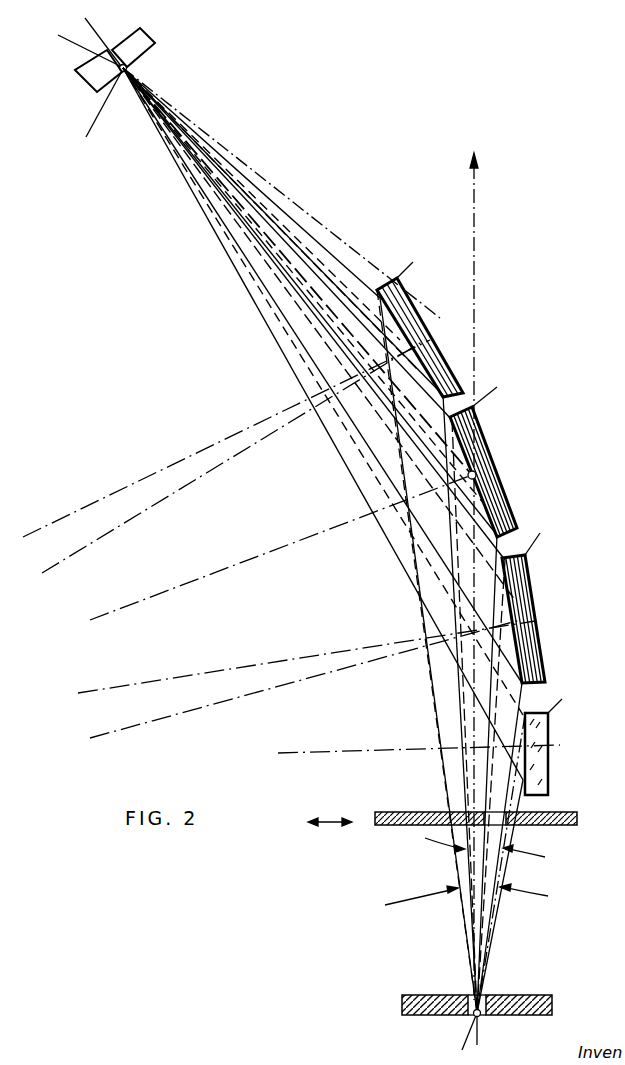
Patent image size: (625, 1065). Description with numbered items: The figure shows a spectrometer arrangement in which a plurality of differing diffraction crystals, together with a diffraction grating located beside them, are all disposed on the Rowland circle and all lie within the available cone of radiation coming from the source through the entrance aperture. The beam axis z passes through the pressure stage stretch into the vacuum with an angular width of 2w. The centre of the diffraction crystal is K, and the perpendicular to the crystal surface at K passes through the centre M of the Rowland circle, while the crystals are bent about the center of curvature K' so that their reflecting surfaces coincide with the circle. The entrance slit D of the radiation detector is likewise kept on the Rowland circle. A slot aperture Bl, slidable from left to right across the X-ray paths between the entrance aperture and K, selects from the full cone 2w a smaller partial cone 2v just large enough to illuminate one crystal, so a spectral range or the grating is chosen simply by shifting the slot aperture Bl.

The entrance slit of the radiation detector D is at (106, 92).
The axis of the radiation beam z is at (469, 565).
The centre of the diffraction crystal K is at (500, 455).
The center of curvature of the bending K' is at (271, 539).
The centre of the Rowland circle M is at (301, 546).
The slot aperture Bl is at (390, 832).
The angle of the partial cone of rays 2v is at (496, 855).
The angular width of the available cone of radiation 2w is at (466, 898).